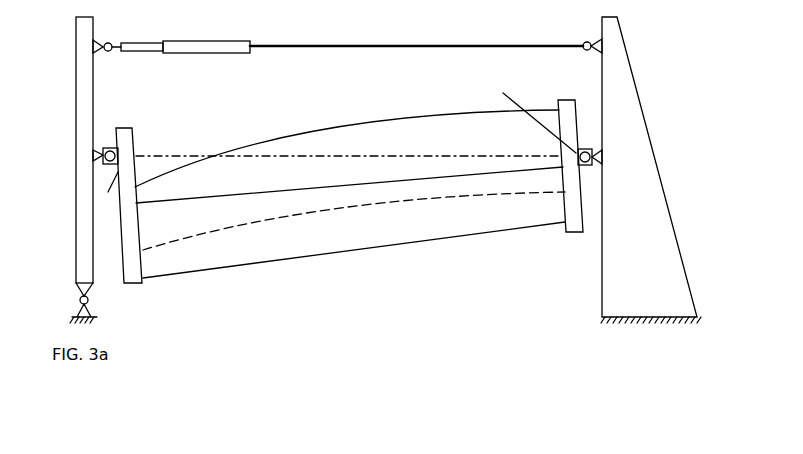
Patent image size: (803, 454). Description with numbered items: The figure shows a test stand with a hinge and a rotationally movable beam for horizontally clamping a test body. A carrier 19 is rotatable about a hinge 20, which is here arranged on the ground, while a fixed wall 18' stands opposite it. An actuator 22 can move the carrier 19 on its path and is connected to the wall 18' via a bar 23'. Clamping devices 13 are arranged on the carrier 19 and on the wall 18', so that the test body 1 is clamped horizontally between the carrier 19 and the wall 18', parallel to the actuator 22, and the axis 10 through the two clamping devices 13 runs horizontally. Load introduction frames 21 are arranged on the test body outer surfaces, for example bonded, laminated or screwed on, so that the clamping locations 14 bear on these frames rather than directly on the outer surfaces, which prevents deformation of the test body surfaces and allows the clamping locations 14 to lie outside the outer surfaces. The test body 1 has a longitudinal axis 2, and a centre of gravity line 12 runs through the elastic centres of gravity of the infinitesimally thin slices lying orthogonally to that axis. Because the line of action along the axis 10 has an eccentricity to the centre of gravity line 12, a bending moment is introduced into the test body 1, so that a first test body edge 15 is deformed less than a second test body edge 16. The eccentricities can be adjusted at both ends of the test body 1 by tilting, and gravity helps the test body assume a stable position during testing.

The test body 1 is at (350, 189).
The longitudinal axis 2 is at (416, 178).
The axis 10 is at (185, 157).
The centre of gravity line 12 is at (372, 205).
The clamping device 13 is at (102, 148).
The clamping location 14 is at (336, 147).
The first test body edge 15 is at (246, 260).
The second test body edge 16 is at (363, 123).
The wall 18' is at (653, 170).
The carrier 19 is at (78, 136).
The hinge 20 is at (90, 301).
The load introduction frame 21 is at (125, 146).
The actuator 22 is at (208, 41).
The bar 23' is at (426, 32).